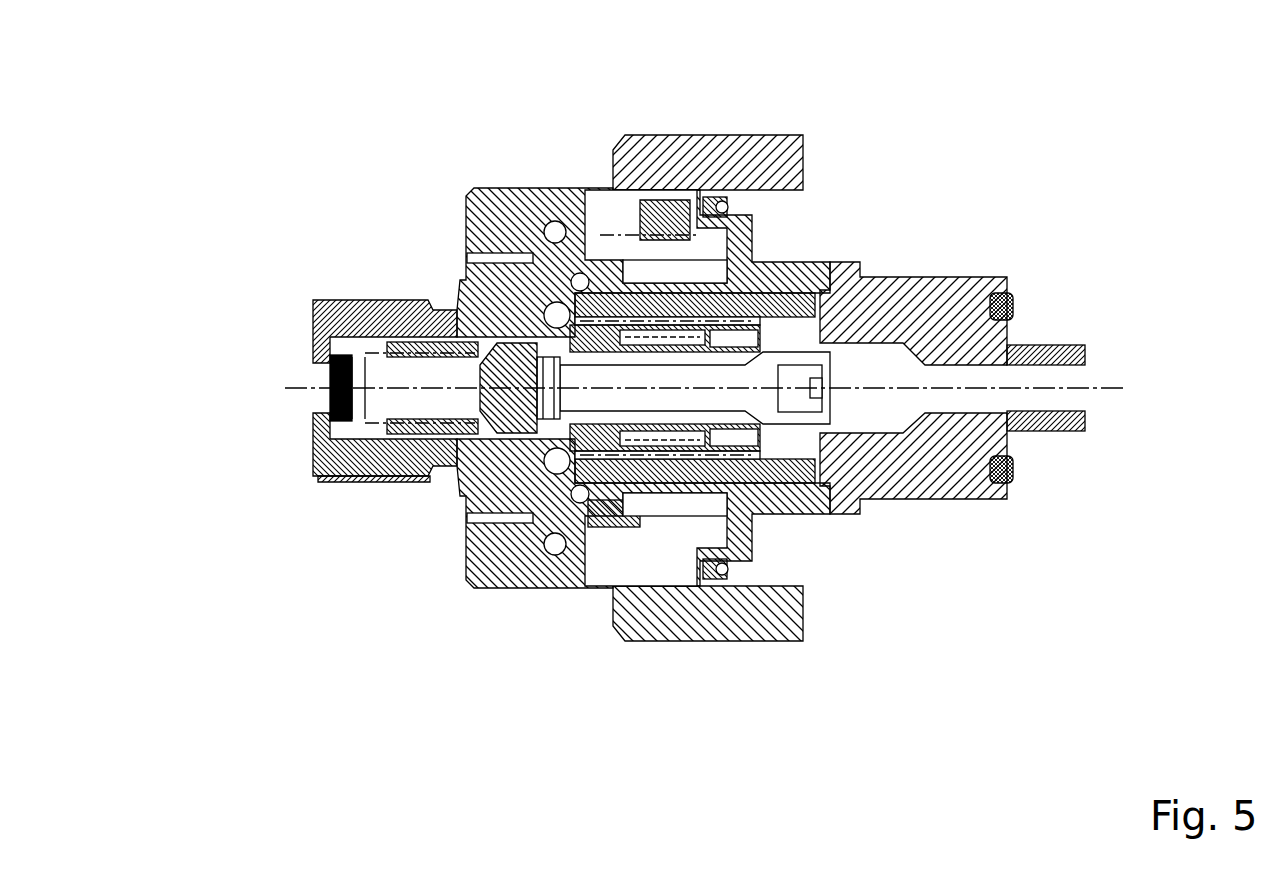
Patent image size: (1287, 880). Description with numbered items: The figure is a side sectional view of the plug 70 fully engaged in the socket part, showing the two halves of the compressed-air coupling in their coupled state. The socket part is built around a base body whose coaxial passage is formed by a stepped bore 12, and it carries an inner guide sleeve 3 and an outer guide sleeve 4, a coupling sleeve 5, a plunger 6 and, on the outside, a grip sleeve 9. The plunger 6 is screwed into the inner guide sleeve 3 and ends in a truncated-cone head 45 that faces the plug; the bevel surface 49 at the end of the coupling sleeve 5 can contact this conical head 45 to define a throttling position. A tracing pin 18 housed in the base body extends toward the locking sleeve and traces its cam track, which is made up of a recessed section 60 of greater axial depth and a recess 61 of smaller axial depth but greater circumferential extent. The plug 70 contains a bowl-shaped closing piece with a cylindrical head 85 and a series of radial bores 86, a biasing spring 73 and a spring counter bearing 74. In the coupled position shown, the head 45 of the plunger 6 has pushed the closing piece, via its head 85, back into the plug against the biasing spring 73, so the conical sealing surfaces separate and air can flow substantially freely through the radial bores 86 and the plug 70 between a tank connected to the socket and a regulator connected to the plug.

The grip sleeve 9 is at (777, 112).
The inner guide sleeve 3 is at (838, 444).
The outer guide sleeve 4 is at (773, 508).
The coupling sleeve 5 is at (860, 263).
The plunger 6 is at (827, 517).
The stepped bore 12 is at (1062, 345).
The tracing pin 18 is at (747, 250).
The head 45 is at (540, 515).
The bevel surface 49 is at (582, 462).
The recessed section 60 is at (603, 262).
The recess 61 is at (628, 255).
The plug 70 is at (318, 258).
The biasing spring 73 is at (362, 478).
The spring counter bearing 74 is at (330, 432).
The cylindrical head 85 is at (468, 476).
The radial bores 86 is at (420, 298).